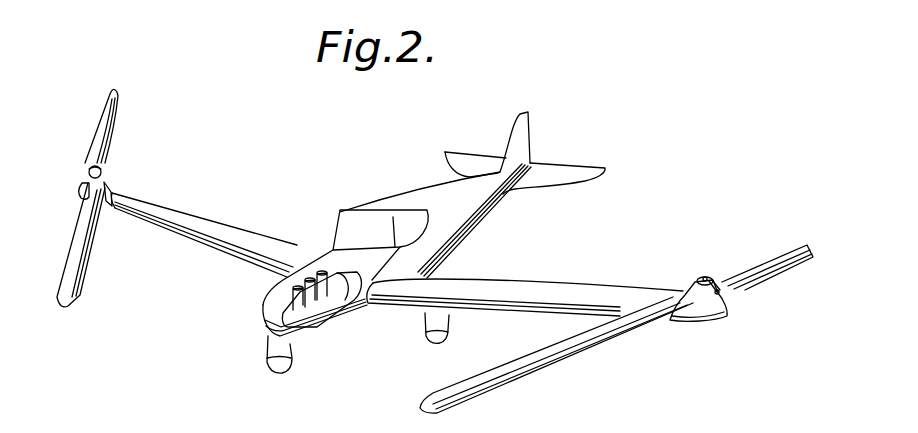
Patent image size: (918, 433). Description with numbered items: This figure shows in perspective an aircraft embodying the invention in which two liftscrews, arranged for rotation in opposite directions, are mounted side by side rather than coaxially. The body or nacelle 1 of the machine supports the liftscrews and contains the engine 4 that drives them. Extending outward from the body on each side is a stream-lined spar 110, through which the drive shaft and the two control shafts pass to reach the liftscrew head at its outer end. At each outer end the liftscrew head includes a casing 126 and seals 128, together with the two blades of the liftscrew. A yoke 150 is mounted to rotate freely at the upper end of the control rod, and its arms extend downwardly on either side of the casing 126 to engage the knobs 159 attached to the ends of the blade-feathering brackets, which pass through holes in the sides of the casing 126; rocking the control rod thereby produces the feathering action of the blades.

The body or nacelle 1 is at (446, 254).
The engine 4 is at (318, 309).
The stream-lined spar 110 is at (237, 242).
The casing 126 is at (104, 179).
The seals 128 is at (88, 172).
The yoke 150 is at (102, 170).
The knobs 159 is at (722, 294).